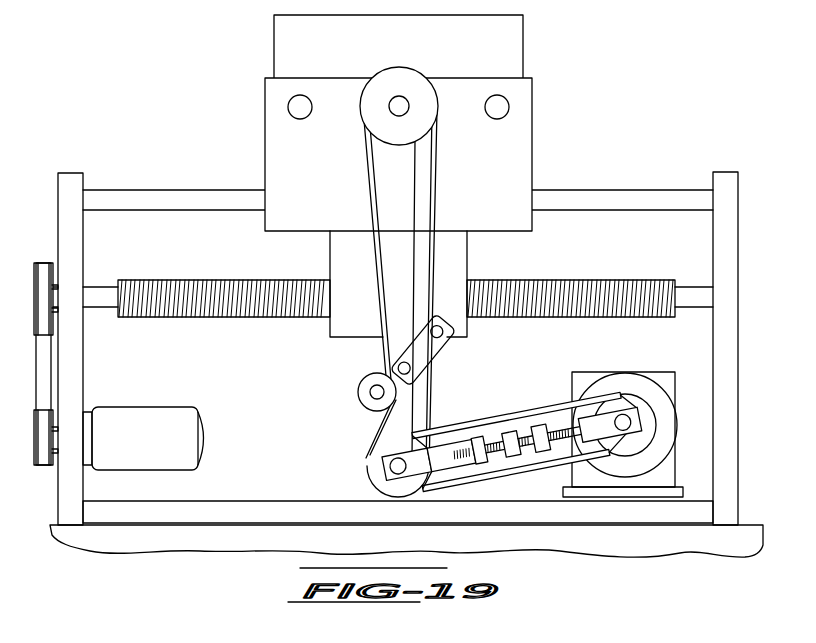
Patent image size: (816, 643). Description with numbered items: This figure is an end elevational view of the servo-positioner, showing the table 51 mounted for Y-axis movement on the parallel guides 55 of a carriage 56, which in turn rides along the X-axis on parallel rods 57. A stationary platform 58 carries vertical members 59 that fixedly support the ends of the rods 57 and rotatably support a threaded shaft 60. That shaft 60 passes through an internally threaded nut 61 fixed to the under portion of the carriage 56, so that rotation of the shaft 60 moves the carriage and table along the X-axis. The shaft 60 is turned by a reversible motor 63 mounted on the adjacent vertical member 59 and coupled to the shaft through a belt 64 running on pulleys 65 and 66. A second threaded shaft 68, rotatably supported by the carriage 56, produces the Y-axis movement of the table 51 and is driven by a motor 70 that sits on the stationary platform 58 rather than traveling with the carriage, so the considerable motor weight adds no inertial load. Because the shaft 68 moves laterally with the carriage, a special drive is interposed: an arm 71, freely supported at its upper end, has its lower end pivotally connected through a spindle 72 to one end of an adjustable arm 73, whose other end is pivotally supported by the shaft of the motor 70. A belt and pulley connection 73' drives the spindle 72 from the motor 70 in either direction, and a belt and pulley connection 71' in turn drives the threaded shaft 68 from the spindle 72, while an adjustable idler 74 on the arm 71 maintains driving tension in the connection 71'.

The table 51 is at (512, 48).
The parallel guides 55 is at (302, 118).
The carriage 56 is at (522, 116).
The parallel rods 57 is at (158, 197).
The platform 58 is at (258, 512).
The vertical members 59 is at (77, 383).
The threaded shaft 60 is at (195, 288).
The internally threaded nut 61 is at (345, 327).
The reversible motor 63 is at (192, 423).
The belt 64 is at (43, 363).
The pulley 65 is at (33, 428).
The pulley 66 is at (33, 297).
The threaded shaft 68 is at (399, 105).
The motor 70 is at (667, 455).
The arm 71 is at (419, 308).
The belt and pulley connection 71' is at (458, 290).
The spindle 72 is at (385, 465).
The adjustable arm 73 is at (534, 430).
The belt and pulley connection 73' is at (528, 438).
The adjustable idler 74 is at (367, 398).